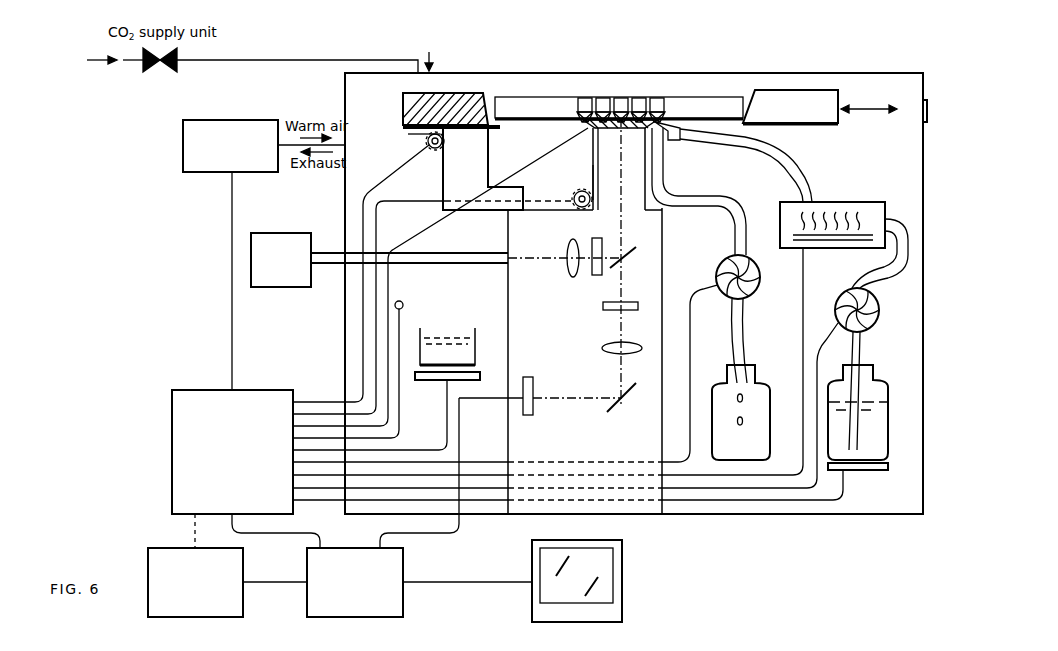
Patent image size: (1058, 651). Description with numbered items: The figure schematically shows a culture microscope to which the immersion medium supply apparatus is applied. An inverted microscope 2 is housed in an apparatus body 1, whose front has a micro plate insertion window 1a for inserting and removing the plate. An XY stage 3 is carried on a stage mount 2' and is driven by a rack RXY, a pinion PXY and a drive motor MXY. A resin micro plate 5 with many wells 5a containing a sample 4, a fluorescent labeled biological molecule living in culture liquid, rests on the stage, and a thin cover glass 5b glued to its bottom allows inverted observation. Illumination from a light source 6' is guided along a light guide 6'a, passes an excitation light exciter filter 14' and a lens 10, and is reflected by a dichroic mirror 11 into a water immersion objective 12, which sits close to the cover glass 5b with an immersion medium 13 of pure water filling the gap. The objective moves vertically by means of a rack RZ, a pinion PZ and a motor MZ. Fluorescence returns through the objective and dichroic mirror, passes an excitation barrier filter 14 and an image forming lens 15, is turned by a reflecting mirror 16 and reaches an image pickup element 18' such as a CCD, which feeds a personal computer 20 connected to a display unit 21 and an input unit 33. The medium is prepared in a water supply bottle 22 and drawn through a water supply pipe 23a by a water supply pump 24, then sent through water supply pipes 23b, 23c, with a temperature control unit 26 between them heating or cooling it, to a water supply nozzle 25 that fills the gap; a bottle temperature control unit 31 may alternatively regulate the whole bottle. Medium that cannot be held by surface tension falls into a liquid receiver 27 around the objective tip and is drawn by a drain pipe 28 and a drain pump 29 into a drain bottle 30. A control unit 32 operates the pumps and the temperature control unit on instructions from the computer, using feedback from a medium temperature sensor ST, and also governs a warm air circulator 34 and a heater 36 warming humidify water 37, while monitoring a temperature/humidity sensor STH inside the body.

The apparatus body 1 is at (494, 74).
The micro plate insertion window 1a is at (927, 112).
The inverted microscope 2 is at (569, 361).
The stage mount 2' is at (483, 167).
The XY stage 3 is at (403, 109).
The sample 4 is at (616, 108).
The micro plate 5 is at (697, 104).
The well 5a is at (642, 107).
The cover glass 5b is at (727, 105).
The light source 6' is at (281, 243).
The light guide 6'a is at (409, 276).
The lens 10 is at (566, 245).
The dichroic mirror 11 is at (632, 262).
The water immersion objective 12 is at (593, 162).
The immersion medium 13 is at (877, 434).
The excitation barrier filter 14 is at (597, 305).
The excitation light exciter filter 14' is at (603, 244).
The image forming lens 15 is at (602, 348).
The reflecting mirror 16 is at (617, 414).
The image pickup element 18' is at (532, 384).
The personal computer 20 is at (404, 596).
The display unit 21 is at (623, 596).
The water supply bottle 22 is at (877, 390).
The water supply pipe 23a is at (860, 348).
The water supply pipe 23b is at (909, 243).
The water supply pipe 23c is at (799, 157).
The water supply pump 24 is at (880, 311).
The water supply nozzle 25 is at (674, 140).
The temperature control unit 26 is at (873, 203).
The liquid receiver 27 is at (560, 146).
The drain pipe 28 is at (721, 203).
The drain pump 29 is at (761, 281).
The drain bottle 30 is at (762, 427).
The bottle temperature control unit 31 is at (873, 475).
The control unit 32 is at (268, 390).
The input unit 33 is at (244, 598).
The warm air circulator 34 is at (262, 120).
The heater 36 is at (429, 381).
The humidify water 37 is at (447, 335).
The rack RXY is at (408, 134).
The pinion PXY is at (427, 141).
The drive motor MXY is at (437, 149).
The rack RZ is at (593, 183).
The pinion PZ is at (582, 189).
The motor MZ is at (574, 194).
The medium temperature sensor ST is at (582, 130).
The temperature/humidity sensor STH is at (351, 360).